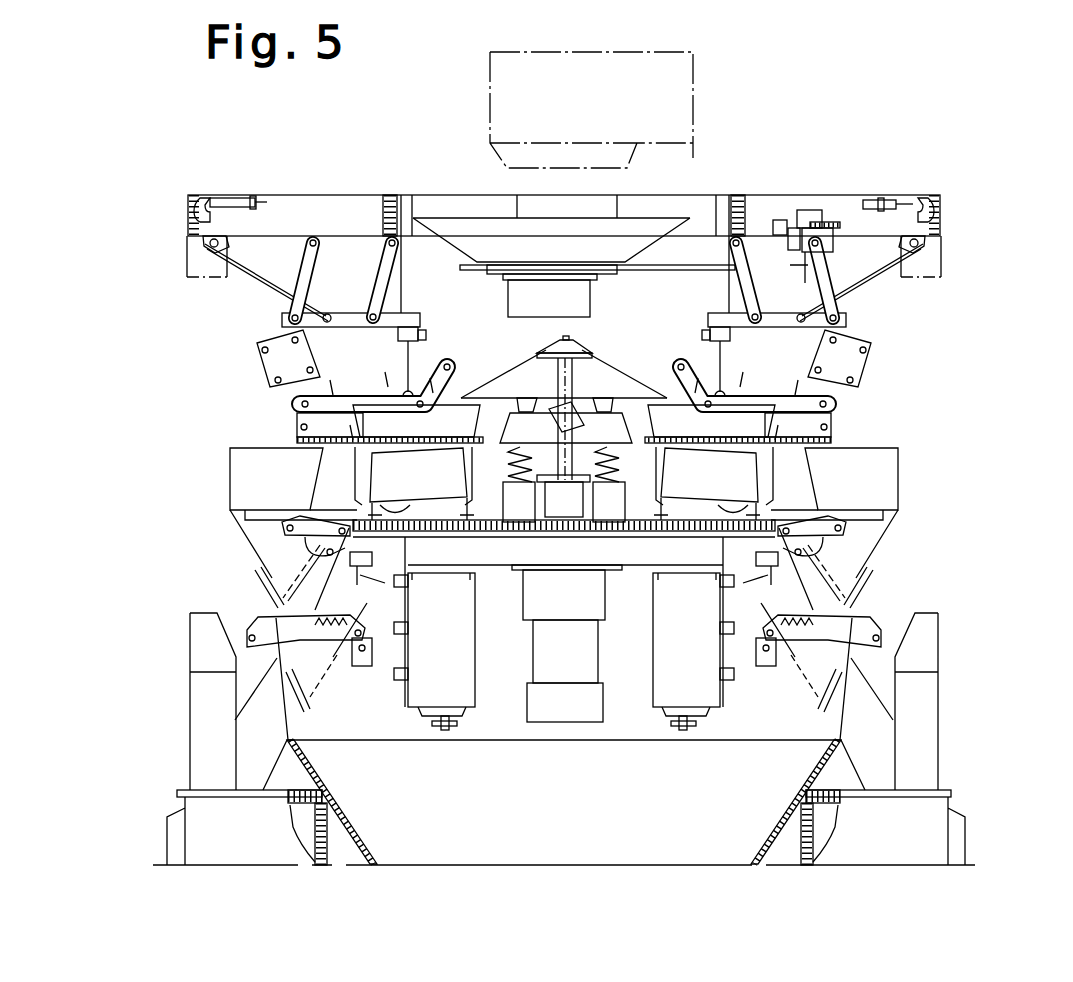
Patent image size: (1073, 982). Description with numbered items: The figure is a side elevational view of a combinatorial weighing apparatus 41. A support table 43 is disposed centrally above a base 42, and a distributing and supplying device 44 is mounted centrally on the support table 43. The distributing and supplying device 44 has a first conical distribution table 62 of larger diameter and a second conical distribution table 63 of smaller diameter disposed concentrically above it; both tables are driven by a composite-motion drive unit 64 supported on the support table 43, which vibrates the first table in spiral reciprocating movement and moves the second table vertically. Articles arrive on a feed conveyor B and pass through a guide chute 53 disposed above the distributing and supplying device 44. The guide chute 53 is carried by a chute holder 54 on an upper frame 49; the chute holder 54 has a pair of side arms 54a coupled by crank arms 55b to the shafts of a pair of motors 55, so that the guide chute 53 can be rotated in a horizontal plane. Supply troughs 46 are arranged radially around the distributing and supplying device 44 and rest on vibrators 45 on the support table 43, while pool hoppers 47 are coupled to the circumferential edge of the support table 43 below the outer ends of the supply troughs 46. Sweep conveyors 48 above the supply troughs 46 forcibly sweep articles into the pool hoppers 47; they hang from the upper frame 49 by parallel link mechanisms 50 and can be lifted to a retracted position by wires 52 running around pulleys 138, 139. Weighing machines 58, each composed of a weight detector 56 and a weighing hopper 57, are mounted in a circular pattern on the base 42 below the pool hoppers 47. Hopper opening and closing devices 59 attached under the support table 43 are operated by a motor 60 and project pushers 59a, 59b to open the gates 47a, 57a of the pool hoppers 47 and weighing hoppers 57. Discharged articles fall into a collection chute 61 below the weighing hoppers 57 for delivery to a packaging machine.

The feed conveyor B is at (490, 102).
The combinatorial weighing apparatus 41 is at (1010, 272).
The base 42 is at (940, 810).
The support table 43 is at (497, 530).
The distributing and supplying device 44 is at (603, 362).
The vibrators 45 is at (387, 485).
The supply troughs 46 is at (447, 415).
The pool hoppers 47 is at (257, 543).
The gates of the pool hoppers 47a is at (564, 592).
The sweep conveyors 48 is at (455, 338).
The upper frame 49 is at (947, 217).
The parallel link mechanisms 50 is at (305, 252).
The wires 52 is at (256, 278).
The guide chute 53 is at (517, 296).
The chute holder 54 is at (605, 273).
The side arms 54a is at (470, 267).
The motors 55 is at (807, 210).
The crank arms 55b is at (803, 278).
The weight detectors 56 is at (207, 727).
The weighing hoppers 57 is at (265, 613).
The gates of the weighing hoppers 57a is at (307, 700).
The weighing machines 58 is at (178, 642).
The hopper opening and closing devices 59 is at (463, 653).
The pusher 59a is at (347, 563).
The pusher 59b is at (377, 653).
The motor 60 is at (587, 663).
The collection chute 61 is at (617, 750).
The first conical distribution table 62 is at (528, 373).
The second conical distribution table 63 is at (547, 345).
The composite-motion drive unit 64 is at (495, 430).
The pulley 138 is at (195, 222).
The pulley 139 is at (208, 246).